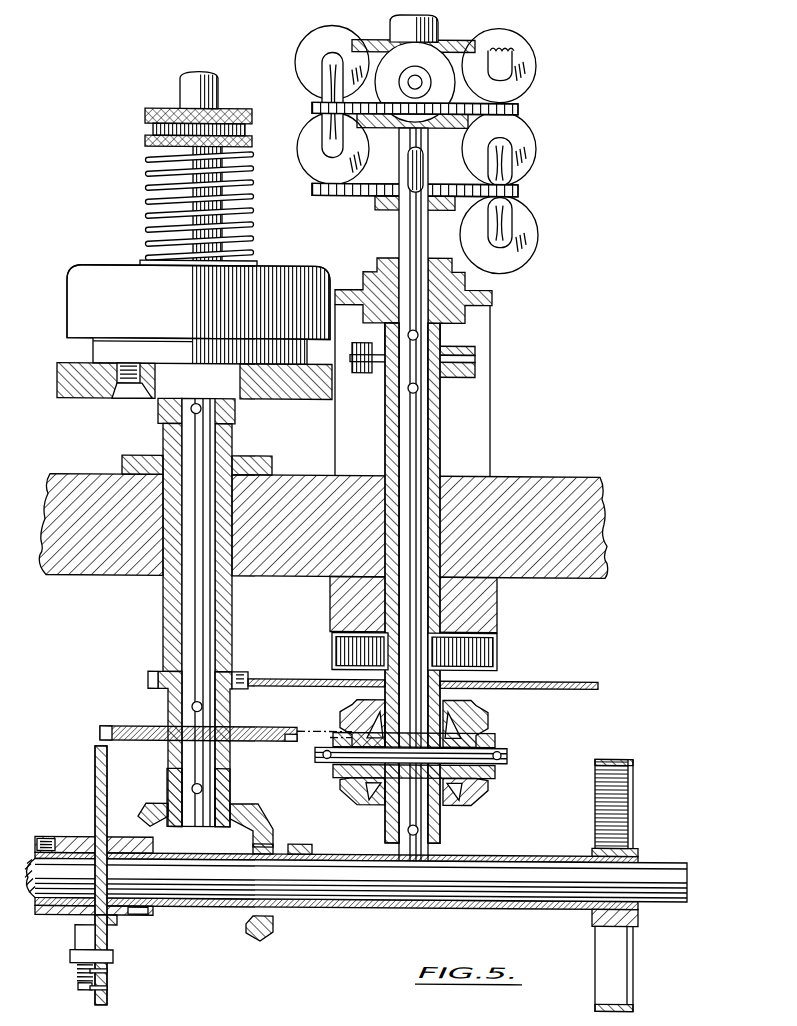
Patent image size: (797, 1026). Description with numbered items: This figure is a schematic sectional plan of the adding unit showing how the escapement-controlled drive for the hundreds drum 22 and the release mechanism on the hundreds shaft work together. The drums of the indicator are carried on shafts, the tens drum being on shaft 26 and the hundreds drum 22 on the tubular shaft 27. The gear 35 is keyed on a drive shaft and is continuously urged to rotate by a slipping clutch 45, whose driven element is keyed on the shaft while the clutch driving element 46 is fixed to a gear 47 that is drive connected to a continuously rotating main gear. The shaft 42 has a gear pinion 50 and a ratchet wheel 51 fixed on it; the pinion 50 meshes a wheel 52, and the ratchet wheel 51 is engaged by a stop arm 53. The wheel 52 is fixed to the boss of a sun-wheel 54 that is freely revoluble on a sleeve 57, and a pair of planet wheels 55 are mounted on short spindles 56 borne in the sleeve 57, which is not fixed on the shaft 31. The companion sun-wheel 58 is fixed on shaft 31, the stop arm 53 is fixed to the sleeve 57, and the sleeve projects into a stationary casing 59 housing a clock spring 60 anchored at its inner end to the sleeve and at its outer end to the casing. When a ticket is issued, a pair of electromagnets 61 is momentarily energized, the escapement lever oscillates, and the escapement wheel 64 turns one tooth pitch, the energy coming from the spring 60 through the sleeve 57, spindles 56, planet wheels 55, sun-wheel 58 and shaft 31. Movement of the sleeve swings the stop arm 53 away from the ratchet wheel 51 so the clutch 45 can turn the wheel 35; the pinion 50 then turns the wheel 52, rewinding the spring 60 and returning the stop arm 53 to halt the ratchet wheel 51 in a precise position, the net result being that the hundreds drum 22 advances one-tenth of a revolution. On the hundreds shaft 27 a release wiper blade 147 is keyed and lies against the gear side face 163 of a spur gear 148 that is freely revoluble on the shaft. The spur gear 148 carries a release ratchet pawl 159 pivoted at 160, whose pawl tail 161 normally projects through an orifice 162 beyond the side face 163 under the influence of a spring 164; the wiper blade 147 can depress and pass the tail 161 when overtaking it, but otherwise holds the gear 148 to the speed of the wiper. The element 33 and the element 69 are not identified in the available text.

The hundreds drum 22 is at (634, 838).
The shaft 26 is at (548, 861).
The tubular shaft 27 is at (513, 855).
The shaft 31 is at (399, 237).
The lug 33 is at (270, 942).
The gear 35 is at (240, 809).
The drive shaft 42 is at (163, 643).
The slipping clutch 45 is at (120, 253).
The clutch driving element 46 is at (155, 352).
The gear 47 is at (80, 404).
The gear pinion 50 is at (243, 673).
The ratchet wheel 51 is at (124, 728).
The wheel 52 is at (565, 681).
The stop arm 53 is at (362, 718).
The sun-wheel 54 is at (470, 712).
The planet wheels 55 is at (507, 750).
The short spindles 56 is at (507, 765).
The sleeve 57 is at (463, 792).
The sun-wheel 58 is at (447, 812).
The stationary casing 59 is at (497, 668).
The clock spring 60 is at (332, 650).
The electromagnets 61 is at (302, 96).
The escapement wheel 64 is at (376, 208).
The frame 69 is at (512, 474).
The release wiper blade 147 is at (112, 930).
The spur gear 148 is at (107, 1000).
The release ratchet pawl 159 is at (75, 954).
The pivot 160 is at (75, 979).
The pawl tail 161 is at (113, 962).
The orifice 162 is at (107, 973).
The gear side face 163 is at (107, 988).
The spring 164 is at (78, 992).